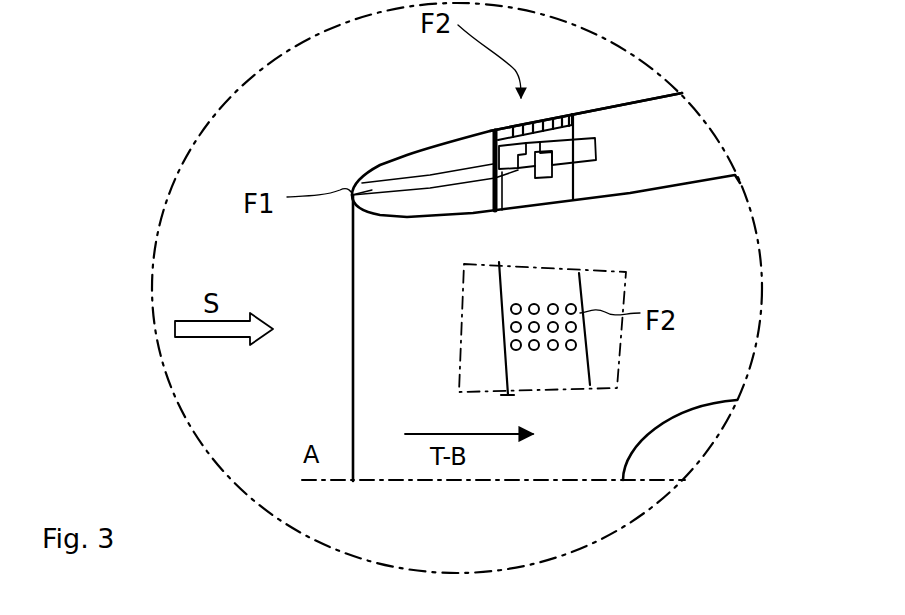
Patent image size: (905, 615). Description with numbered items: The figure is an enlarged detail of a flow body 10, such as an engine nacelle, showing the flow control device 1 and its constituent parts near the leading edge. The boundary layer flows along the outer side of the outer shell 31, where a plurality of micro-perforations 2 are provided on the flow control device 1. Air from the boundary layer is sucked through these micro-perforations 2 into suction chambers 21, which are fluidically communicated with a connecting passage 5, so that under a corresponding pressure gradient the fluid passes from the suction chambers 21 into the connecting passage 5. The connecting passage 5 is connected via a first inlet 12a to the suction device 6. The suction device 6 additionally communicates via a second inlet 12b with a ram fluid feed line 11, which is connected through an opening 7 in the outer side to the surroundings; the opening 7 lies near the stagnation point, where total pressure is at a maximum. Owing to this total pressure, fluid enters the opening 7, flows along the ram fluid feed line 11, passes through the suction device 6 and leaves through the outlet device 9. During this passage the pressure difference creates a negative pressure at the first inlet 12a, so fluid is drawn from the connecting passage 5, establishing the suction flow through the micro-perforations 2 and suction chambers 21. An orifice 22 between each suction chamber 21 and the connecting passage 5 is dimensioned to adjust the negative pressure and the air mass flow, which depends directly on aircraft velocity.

The flow control device 1 is at (476, 110).
The micro-perforations 2 is at (502, 120).
The connecting passage 5 is at (490, 154).
The suction device 6 is at (600, 126).
The opening 7 is at (348, 198).
The outlet device 9 is at (598, 149).
The flow body 10 is at (303, 96).
The ram fluid feed line 11 is at (378, 182).
The first inlet 12a is at (540, 177).
The second inlet 12b is at (510, 212).
The suction chambers 21 is at (562, 115).
The orifice 22 is at (507, 347).
The outer shell 31 is at (633, 96).